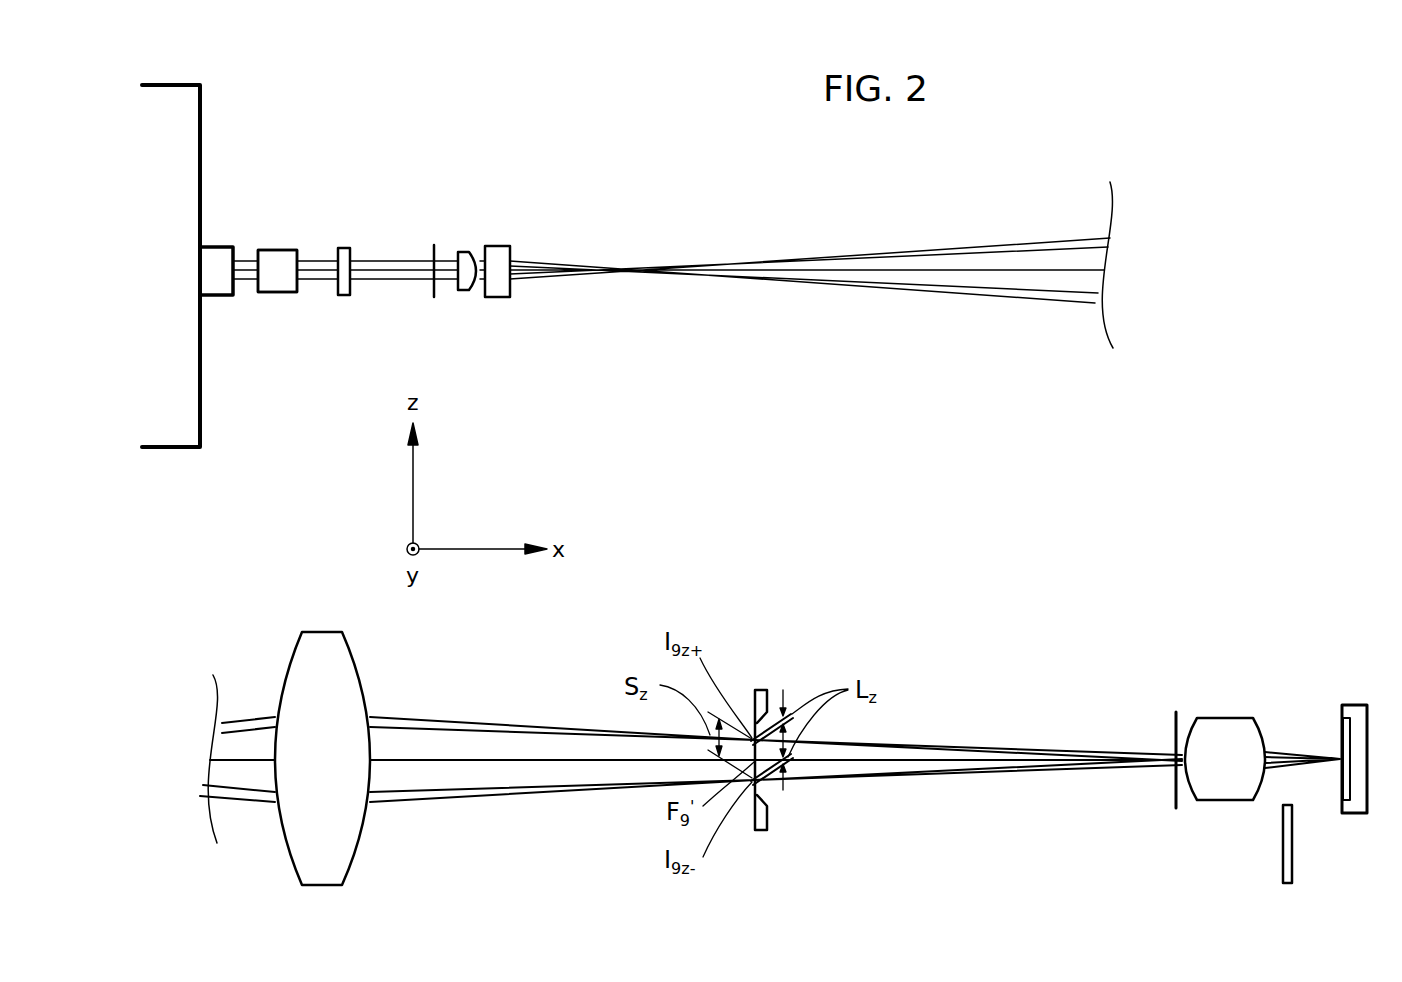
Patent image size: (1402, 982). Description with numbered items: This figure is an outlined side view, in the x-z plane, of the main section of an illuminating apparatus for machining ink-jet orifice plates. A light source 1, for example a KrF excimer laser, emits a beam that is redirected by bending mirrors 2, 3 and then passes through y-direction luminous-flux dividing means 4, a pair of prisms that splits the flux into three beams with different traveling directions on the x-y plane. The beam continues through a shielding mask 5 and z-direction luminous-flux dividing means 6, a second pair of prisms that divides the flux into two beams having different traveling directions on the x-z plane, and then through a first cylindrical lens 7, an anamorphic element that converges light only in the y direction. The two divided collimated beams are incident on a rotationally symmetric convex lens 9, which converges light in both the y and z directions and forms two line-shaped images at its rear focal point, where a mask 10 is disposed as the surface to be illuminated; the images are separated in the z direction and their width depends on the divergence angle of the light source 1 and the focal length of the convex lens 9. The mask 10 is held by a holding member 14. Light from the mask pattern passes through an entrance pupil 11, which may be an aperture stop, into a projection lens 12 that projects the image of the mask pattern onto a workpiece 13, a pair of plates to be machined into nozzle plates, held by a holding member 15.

The light source 1 is at (188, 112).
The bending mirror 2 is at (275, 245).
The bending mirror 3 is at (275, 245).
The y-direction luminous-flux dividing means 4 is at (343, 248).
The shielding mask 5 is at (434, 245).
The z-direction luminous-flux dividing means 6 is at (467, 252).
The first cylindrical lens 7 is at (500, 246).
The convex lens 9 is at (300, 647).
The mask 10 is at (755, 707).
The entrance pupil 11 is at (1173, 720).
The projection lens 12 is at (1203, 733).
The workpiece 13 is at (1338, 728).
The holding member 14 is at (767, 818).
The holding member 15 is at (1358, 710).